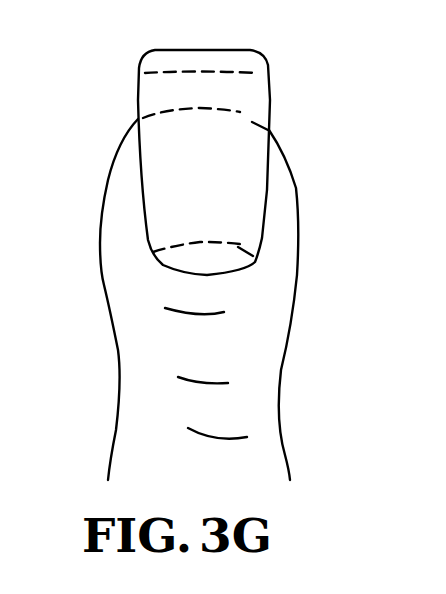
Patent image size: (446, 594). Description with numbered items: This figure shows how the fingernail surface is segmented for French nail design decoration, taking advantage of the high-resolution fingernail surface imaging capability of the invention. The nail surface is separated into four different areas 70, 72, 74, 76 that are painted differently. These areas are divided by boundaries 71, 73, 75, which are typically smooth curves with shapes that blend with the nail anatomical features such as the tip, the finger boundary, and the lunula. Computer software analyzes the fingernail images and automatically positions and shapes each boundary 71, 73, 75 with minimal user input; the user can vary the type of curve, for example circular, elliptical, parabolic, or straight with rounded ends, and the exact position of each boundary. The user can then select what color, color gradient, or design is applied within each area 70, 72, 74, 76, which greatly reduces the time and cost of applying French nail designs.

The first area 70 is at (181, 263).
The boundary 71 is at (233, 245).
The second area 72 is at (220, 186).
The boundary 73 is at (230, 116).
The third area 74 is at (163, 101).
The boundary 75 is at (238, 71).
The fourth area 76 is at (170, 64).